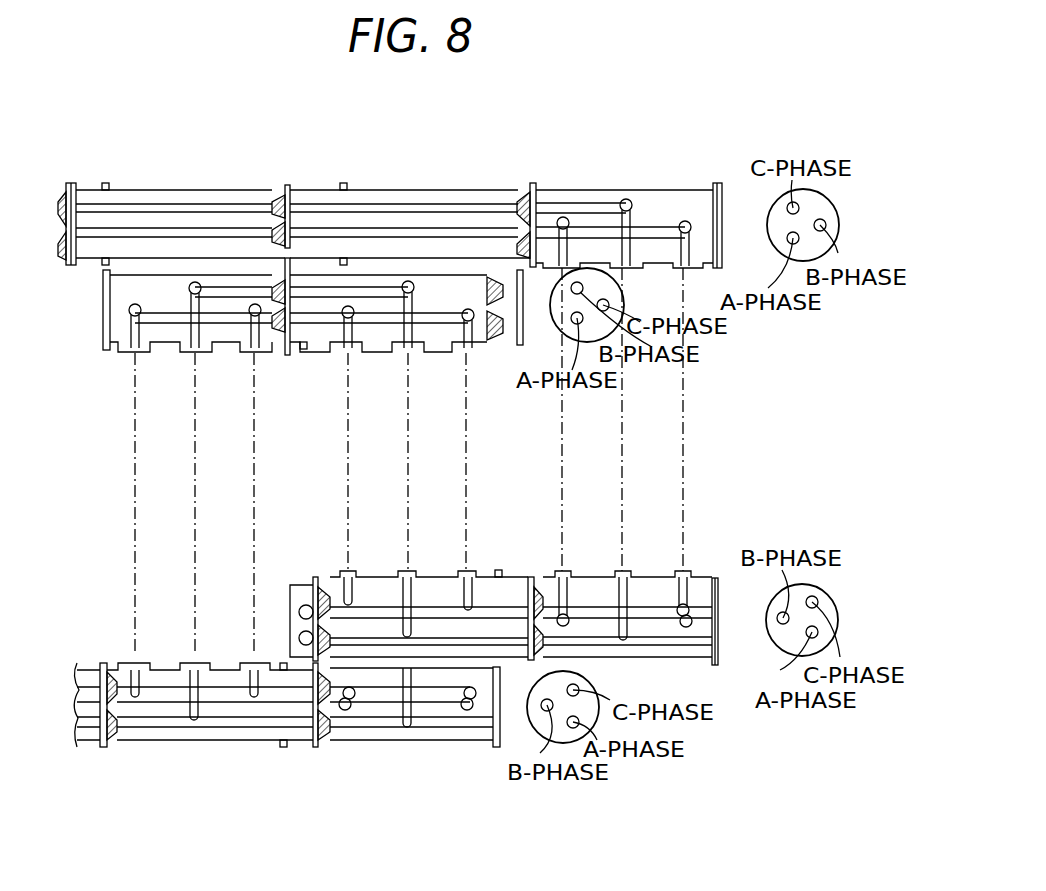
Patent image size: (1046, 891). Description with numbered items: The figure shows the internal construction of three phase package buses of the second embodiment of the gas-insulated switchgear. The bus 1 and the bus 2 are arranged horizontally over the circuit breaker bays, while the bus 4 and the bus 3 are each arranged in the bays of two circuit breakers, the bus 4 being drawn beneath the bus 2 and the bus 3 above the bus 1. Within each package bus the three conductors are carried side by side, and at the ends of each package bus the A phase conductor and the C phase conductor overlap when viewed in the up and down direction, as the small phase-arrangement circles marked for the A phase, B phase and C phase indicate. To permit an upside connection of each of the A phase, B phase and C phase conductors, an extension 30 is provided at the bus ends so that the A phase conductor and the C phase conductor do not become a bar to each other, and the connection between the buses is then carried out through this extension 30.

The bus 1 is at (190, 745).
The bus 2 is at (370, 190).
The bus 3 is at (691, 662).
The bus 4 is at (108, 341).
The extension 30 is at (713, 184).